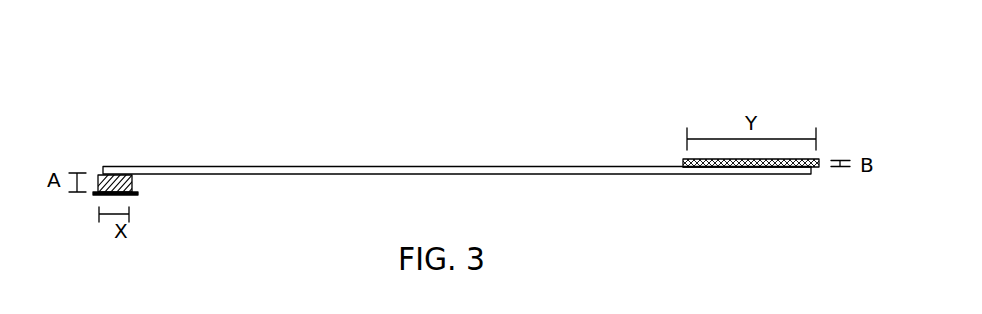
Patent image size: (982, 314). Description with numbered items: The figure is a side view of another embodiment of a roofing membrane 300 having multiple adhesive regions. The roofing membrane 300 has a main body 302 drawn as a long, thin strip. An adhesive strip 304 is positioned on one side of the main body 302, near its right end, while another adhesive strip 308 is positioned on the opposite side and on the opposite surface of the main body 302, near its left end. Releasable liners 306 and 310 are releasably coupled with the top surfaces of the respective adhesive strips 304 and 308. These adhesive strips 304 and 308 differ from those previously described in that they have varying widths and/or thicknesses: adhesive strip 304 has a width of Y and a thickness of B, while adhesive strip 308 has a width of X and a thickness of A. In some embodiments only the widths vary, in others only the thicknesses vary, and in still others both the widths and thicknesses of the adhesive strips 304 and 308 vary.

The roofing membrane 300 is at (551, 126).
The main body 302 is at (320, 167).
The adhesive strip 304 is at (732, 168).
The releasable liner 306 is at (686, 160).
The adhesive strip 308 is at (130, 178).
The releasable liner 310 is at (136, 193).